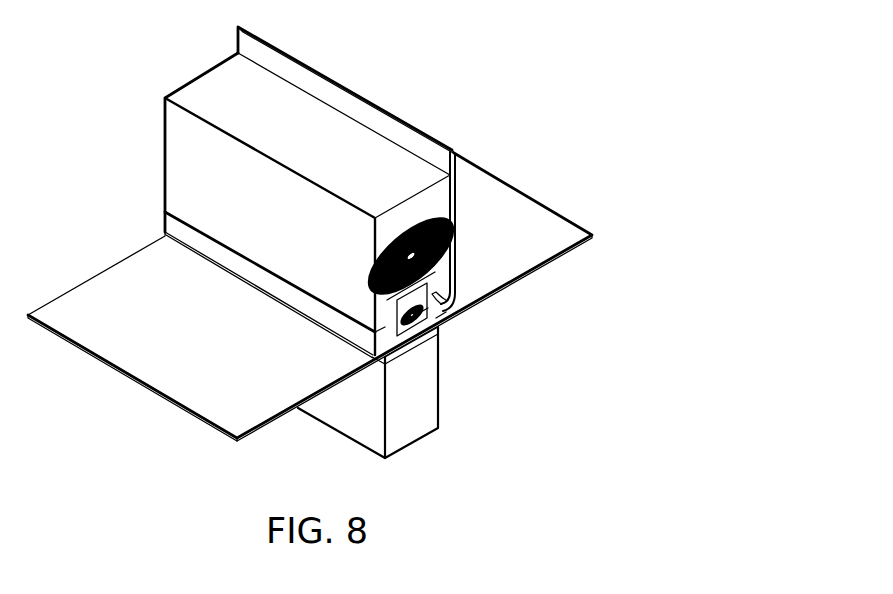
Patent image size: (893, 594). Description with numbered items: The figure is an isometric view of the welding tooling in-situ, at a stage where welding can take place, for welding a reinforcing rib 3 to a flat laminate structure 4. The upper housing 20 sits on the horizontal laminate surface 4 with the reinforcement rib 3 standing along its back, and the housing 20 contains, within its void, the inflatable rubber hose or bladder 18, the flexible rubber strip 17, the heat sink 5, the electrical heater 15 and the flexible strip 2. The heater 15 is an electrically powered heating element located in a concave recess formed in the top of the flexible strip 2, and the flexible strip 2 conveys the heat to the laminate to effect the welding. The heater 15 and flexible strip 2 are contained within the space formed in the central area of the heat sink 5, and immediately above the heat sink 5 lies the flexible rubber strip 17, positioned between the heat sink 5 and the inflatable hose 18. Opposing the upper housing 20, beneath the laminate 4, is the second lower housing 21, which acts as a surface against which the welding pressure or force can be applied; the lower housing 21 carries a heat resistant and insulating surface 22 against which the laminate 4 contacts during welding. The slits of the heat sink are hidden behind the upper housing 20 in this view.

The flexible strip 2 is at (442, 323).
The reinforcement rib 3 is at (252, 52).
The laminate surface 4 is at (522, 193).
The heat sink 5 is at (180, 224).
The electrical heater 15 is at (457, 304).
The flexible rubber strip 17 is at (428, 272).
The inflatable rubber hose 18 is at (436, 240).
The upper housing 20 is at (175, 126).
The lower housing 21 is at (420, 405).
The heat resistant and insulating surface 22 is at (437, 342).